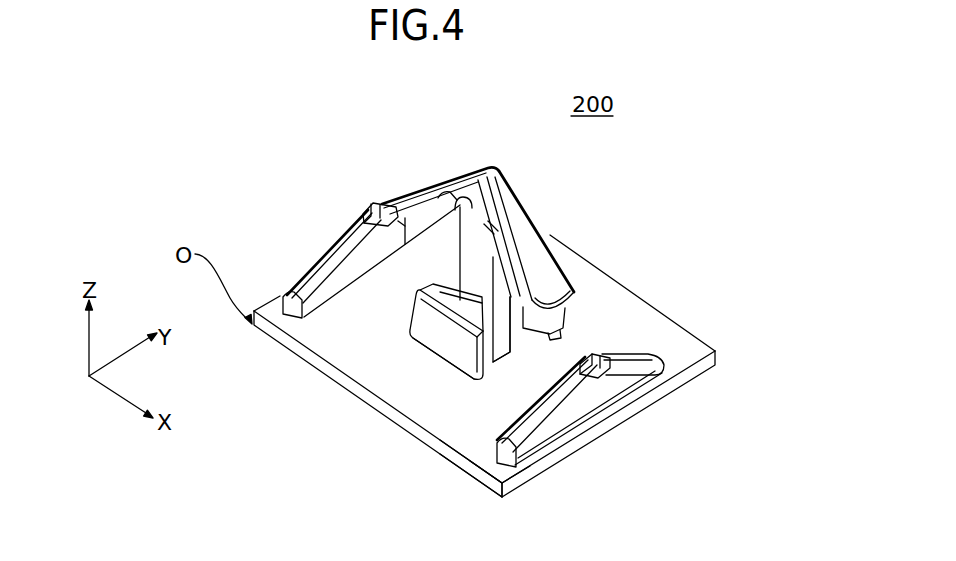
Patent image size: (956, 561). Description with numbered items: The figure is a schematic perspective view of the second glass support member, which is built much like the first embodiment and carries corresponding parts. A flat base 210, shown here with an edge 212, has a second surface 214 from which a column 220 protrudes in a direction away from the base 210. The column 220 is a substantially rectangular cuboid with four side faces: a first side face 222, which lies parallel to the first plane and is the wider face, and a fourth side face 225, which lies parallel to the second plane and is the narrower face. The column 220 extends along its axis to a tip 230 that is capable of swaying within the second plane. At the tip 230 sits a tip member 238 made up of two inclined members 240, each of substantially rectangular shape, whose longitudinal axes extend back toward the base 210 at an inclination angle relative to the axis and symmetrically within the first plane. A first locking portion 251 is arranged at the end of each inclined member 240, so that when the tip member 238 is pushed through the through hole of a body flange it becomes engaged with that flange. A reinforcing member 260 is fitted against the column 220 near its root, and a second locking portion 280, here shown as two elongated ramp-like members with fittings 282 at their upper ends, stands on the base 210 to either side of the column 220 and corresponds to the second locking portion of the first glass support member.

The base 210 is at (547, 468).
The edge of base plate 212 is at (462, 477).
The second surface 214 is at (473, 440).
The column 220 is at (472, 250).
The first side face 222 is at (476, 282).
The fourth side face 225 is at (503, 333).
The tip 230 is at (446, 188).
The tip member 238 is at (512, 171).
The inclined member 240 is at (532, 250).
The first locking portion 251 is at (528, 313).
The reinforcing member 260 is at (433, 325).
The second locking portion 280 is at (318, 248).
The fitting 282 is at (375, 204).